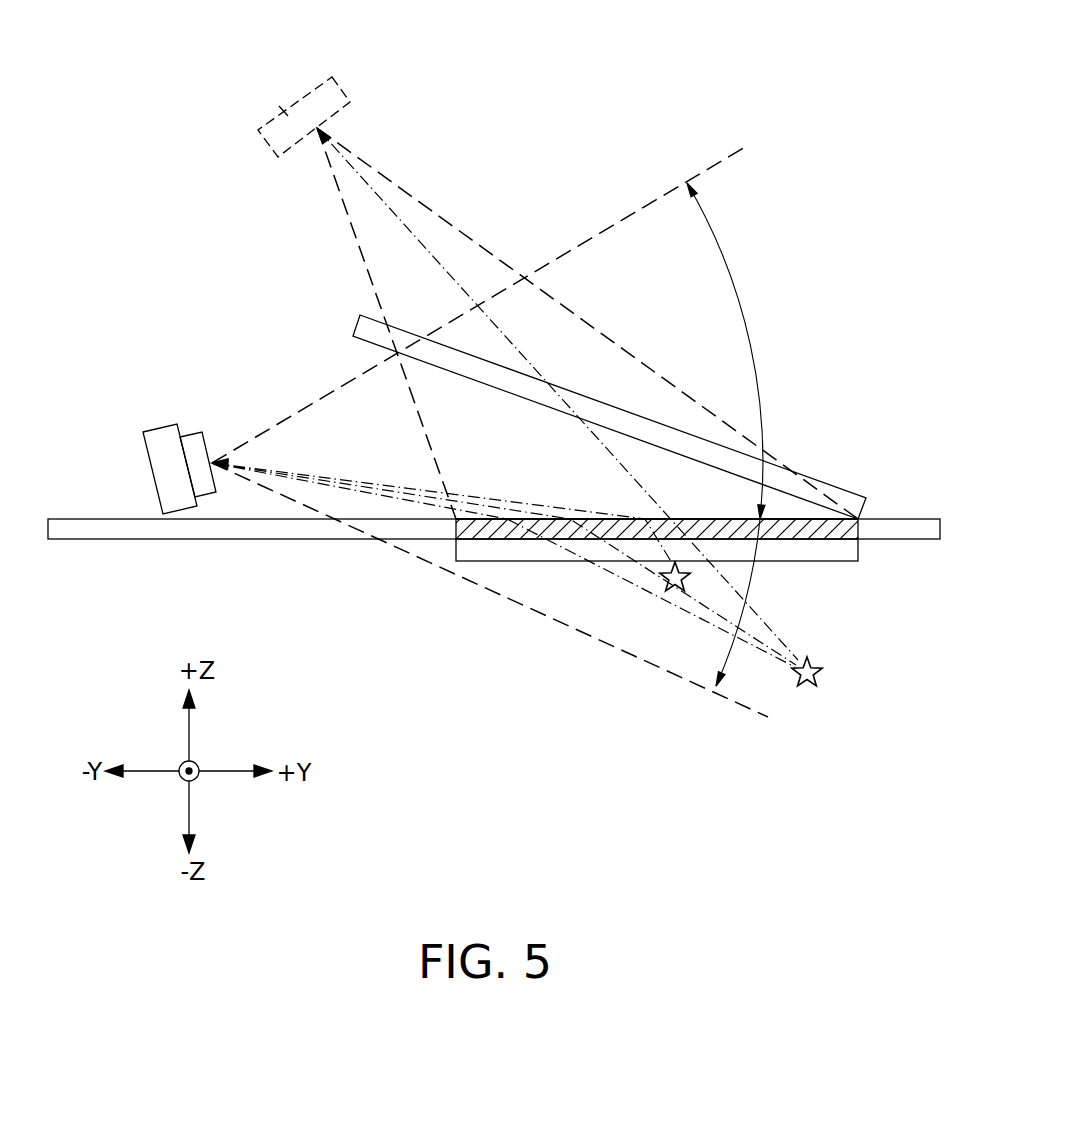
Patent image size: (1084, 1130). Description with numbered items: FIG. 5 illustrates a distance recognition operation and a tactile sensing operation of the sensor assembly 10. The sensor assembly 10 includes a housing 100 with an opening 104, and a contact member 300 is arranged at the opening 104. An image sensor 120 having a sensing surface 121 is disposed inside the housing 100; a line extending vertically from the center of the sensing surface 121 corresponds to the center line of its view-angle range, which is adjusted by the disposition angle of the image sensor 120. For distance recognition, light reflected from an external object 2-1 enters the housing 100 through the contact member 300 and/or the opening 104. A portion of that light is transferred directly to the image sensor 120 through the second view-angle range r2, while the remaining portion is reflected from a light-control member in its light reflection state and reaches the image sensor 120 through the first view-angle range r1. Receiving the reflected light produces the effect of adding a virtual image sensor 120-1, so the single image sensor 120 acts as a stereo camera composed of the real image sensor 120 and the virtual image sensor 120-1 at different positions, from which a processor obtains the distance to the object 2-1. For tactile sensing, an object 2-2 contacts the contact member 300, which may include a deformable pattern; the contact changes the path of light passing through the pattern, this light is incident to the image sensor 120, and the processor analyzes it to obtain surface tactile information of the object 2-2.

The sensor assembly 10 is at (562, 34).
The housing 100 is at (905, 520).
The opening 104 is at (851, 528).
The image sensor 120 is at (158, 448).
The virtual image sensor 120-1 is at (282, 110).
The sensing surface 121 is at (200, 434).
The contact member 300 is at (805, 548).
The object 2-1 is at (818, 675).
The object 2-2 is at (665, 590).
The first view-angle range r1 is at (735, 351).
The second view-angle range r2 is at (738, 602).